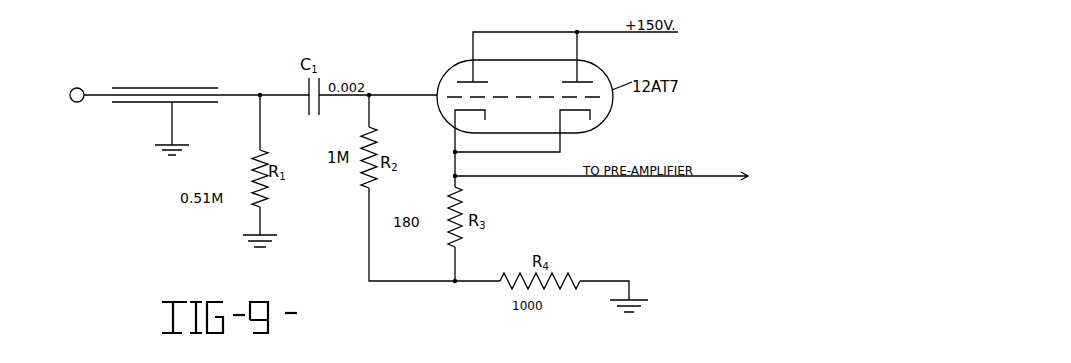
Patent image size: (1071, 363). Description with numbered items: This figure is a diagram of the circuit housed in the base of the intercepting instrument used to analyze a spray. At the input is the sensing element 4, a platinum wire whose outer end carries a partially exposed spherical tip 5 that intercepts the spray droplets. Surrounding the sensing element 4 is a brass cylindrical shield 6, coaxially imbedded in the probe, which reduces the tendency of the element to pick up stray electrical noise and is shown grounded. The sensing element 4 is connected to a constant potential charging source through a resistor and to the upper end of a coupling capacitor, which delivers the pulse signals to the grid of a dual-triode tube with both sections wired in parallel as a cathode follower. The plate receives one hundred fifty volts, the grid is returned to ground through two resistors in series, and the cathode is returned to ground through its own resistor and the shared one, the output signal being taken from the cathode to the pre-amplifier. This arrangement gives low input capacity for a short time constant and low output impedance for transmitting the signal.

The sensing element 4 is at (100, 99).
The spherical tip 5 is at (73, 88).
The cylindrical shield 6 is at (149, 88).